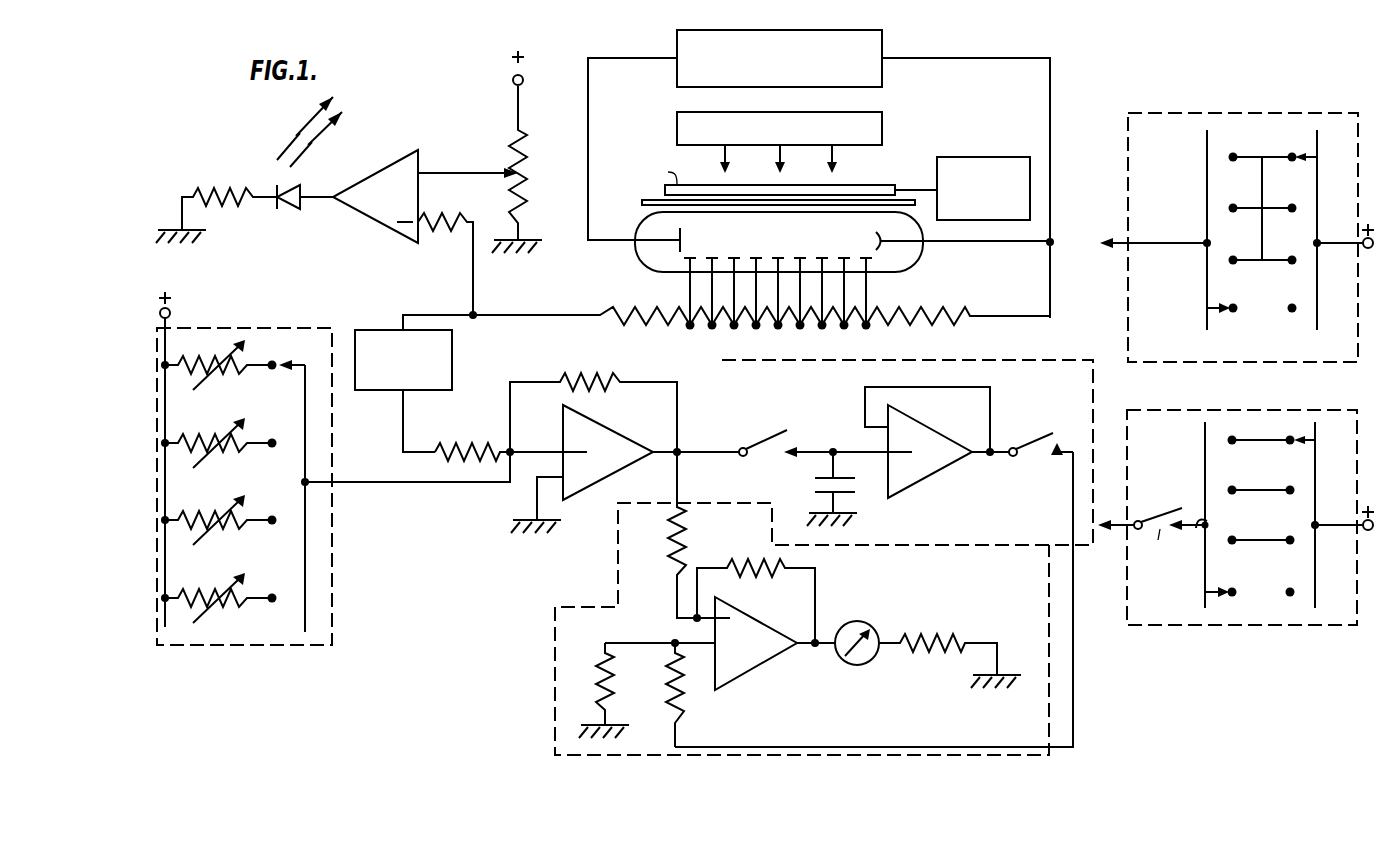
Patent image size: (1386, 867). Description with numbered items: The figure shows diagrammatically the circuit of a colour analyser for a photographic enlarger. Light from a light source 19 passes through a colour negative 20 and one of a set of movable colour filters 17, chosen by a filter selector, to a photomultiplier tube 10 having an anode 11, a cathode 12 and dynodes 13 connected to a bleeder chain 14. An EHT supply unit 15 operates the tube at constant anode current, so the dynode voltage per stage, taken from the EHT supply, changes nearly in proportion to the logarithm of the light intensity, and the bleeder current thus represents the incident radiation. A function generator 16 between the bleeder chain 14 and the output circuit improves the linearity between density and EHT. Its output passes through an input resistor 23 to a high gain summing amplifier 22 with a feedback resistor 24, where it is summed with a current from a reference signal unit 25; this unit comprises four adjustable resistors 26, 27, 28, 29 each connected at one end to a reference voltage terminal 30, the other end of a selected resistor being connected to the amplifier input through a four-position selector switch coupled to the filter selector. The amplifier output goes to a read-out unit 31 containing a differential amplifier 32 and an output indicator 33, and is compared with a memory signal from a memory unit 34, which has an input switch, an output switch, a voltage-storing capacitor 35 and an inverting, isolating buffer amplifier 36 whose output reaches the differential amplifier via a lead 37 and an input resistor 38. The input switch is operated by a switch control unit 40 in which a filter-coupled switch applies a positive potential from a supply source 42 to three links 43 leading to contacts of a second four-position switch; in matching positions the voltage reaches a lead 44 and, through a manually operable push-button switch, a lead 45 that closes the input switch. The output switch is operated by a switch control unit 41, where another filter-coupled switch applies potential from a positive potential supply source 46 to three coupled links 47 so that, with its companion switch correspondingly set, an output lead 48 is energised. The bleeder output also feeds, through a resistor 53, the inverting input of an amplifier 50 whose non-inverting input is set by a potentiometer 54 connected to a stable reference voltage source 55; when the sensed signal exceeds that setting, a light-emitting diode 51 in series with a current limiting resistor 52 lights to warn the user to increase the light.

The photomultiplier tube 10 is at (921, 264).
The anode 11 is at (678, 250).
The cathode 12 is at (880, 245).
The dynodes 13 is at (807, 258).
The bleeder chain 14 is at (750, 318).
The EHT supply unit 15 is at (882, 46).
The function generator 16 is at (452, 353).
The movable colour filters 17 is at (870, 183).
The light source 19 is at (882, 122).
The colour negative 20 is at (642, 203).
The summing amplifier 22 is at (620, 440).
The input resistor 23 is at (455, 441).
The feedback resistor 24 is at (567, 380).
The reference signal unit 25 is at (291, 646).
The adjustable resistor 26 is at (207, 366).
The adjustable resistor 27 is at (207, 444).
The adjustable resistor 28 is at (207, 521).
The adjustable resistor 29 is at (207, 591).
The terminal 30 is at (171, 313).
The read-out unit 31 is at (555, 665).
The differential amplifier 32 is at (745, 621).
The output indicator 33 is at (868, 634).
The memory unit 34 is at (1096, 401).
The capacitor 35 is at (815, 478).
The buffer amplifier 36 is at (920, 424).
The lead 37 is at (1075, 701).
The input resistor 38 is at (678, 712).
The switch control unit 40 is at (1290, 628).
The switch control unit 41 is at (1305, 364).
The supply source 42 is at (1363, 532).
The links 43 is at (1262, 436).
The lead 44 is at (1206, 522).
The lead 45 is at (1128, 531).
The positive potential supply source 46 is at (1365, 250).
The links 47 is at (1277, 146).
The output lead 48 is at (1163, 243).
The amplifier 50 is at (356, 186).
The light-emitting diode 51 is at (290, 211).
The current limiting resistor 52 is at (212, 194).
The resistor 53 is at (449, 231).
The potentiometer 54 is at (511, 131).
The stable reference voltage source 55 is at (512, 80).